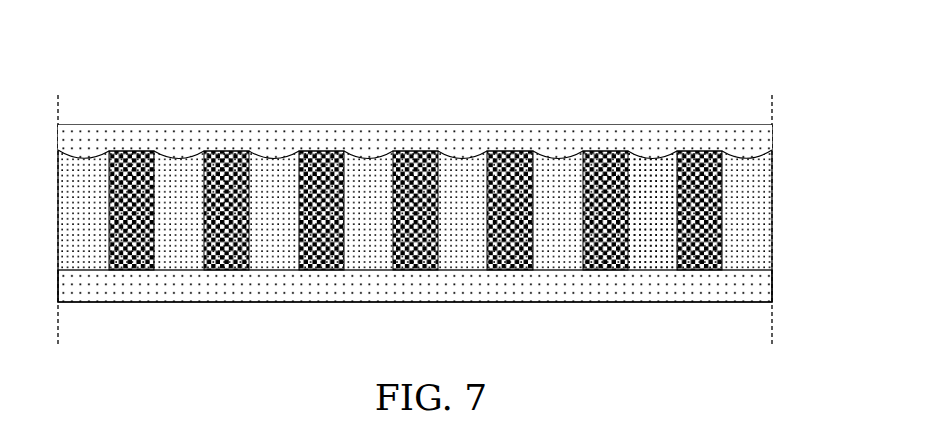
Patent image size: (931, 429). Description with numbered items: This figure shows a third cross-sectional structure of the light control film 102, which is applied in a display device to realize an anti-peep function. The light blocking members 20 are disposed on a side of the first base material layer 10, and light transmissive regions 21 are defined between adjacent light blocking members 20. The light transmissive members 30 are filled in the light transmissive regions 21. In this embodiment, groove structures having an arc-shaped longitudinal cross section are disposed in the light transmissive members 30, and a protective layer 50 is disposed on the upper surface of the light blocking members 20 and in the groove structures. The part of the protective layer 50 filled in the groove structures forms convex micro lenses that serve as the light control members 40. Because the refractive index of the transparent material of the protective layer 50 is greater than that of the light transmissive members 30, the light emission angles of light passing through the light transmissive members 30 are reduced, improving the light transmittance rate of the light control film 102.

The light control film 102 is at (178, 106).
The first base material layer 10 is at (738, 290).
The light blocking members 20 is at (720, 183).
The light transmissive regions 21 is at (655, 250).
The light transmissive members 30 is at (738, 230).
The light control members 40 is at (645, 157).
The protective layer 50 is at (735, 140).